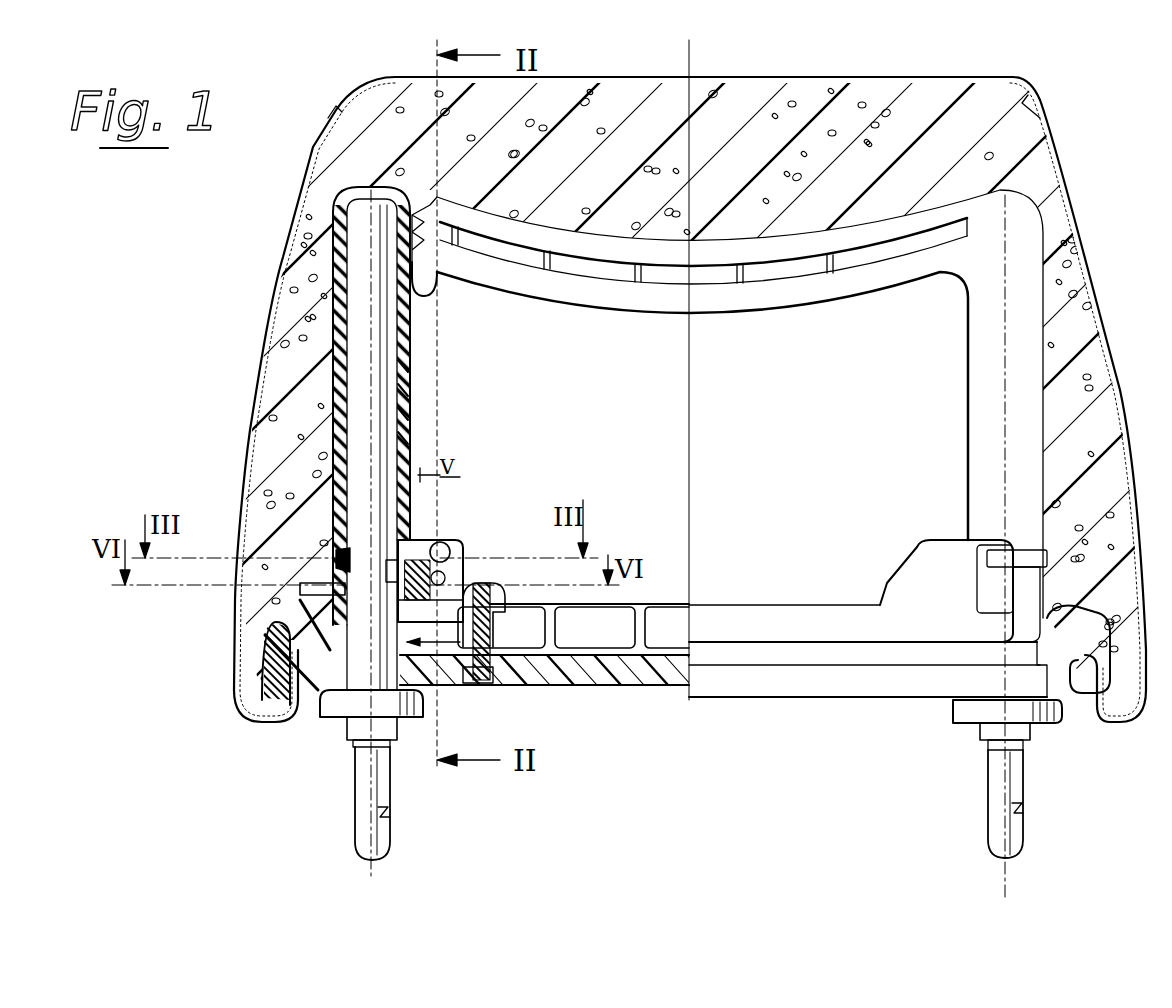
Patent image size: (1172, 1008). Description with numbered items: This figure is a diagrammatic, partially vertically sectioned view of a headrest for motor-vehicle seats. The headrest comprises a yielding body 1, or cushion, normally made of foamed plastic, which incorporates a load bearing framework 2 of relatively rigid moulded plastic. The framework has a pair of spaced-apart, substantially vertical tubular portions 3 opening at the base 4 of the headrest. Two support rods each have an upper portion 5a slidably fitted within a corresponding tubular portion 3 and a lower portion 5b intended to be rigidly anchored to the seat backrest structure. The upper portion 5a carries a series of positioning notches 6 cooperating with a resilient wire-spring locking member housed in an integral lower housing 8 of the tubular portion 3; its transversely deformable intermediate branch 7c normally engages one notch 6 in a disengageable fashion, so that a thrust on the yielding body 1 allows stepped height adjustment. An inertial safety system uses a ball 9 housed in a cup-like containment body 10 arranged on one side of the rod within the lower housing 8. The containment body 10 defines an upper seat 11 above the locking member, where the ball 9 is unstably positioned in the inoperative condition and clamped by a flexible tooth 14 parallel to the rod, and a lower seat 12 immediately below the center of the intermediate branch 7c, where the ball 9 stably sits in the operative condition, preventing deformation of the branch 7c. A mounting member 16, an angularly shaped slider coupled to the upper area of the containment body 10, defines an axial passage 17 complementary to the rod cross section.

The yielding body 1 is at (1073, 268).
The load bearing framework 2 is at (895, 197).
The tubular portion 3 is at (410, 352).
The base 4 is at (602, 663).
The upper portion 5a is at (378, 300).
The lower portion 5b is at (368, 782).
The positioning notches 6 is at (410, 448).
The intermediate branch 7c is at (394, 572).
The lower housing 8 is at (937, 553).
The ball 9 is at (441, 542).
The containment body 10 is at (468, 577).
The upper seat 11 is at (465, 575).
The lower seat 12 is at (503, 627).
The flexible tooth 14 is at (430, 554).
The mounting member 16 is at (345, 562).
The axial passage 17 is at (343, 552).